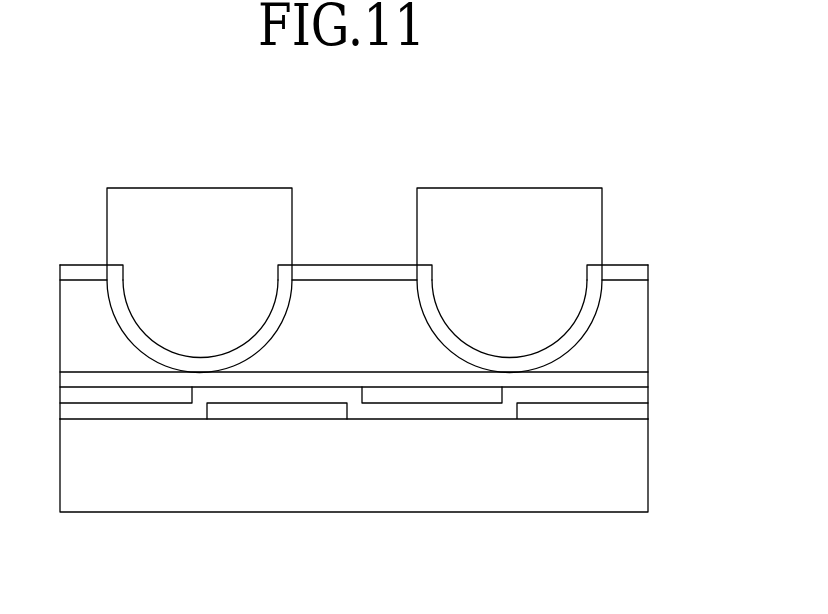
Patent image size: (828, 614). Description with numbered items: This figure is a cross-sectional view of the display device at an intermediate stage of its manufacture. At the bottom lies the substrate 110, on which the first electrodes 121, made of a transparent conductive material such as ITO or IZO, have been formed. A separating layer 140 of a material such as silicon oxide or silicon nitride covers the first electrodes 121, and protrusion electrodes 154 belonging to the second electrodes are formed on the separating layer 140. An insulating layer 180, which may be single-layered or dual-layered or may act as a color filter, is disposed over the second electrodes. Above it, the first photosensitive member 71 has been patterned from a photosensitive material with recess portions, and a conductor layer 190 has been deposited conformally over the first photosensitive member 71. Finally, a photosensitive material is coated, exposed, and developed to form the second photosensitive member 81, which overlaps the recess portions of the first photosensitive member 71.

The substrate 110 is at (113, 487).
The first electrodes 121 is at (297, 412).
The separating layer 140 is at (400, 412).
The protrusion electrodes 154 is at (465, 397).
The insulating layer 180 is at (577, 382).
The first photosensitive member 71 is at (630, 329).
The conductor layer 190 is at (627, 272).
The second photosensitive member 81 is at (515, 203).